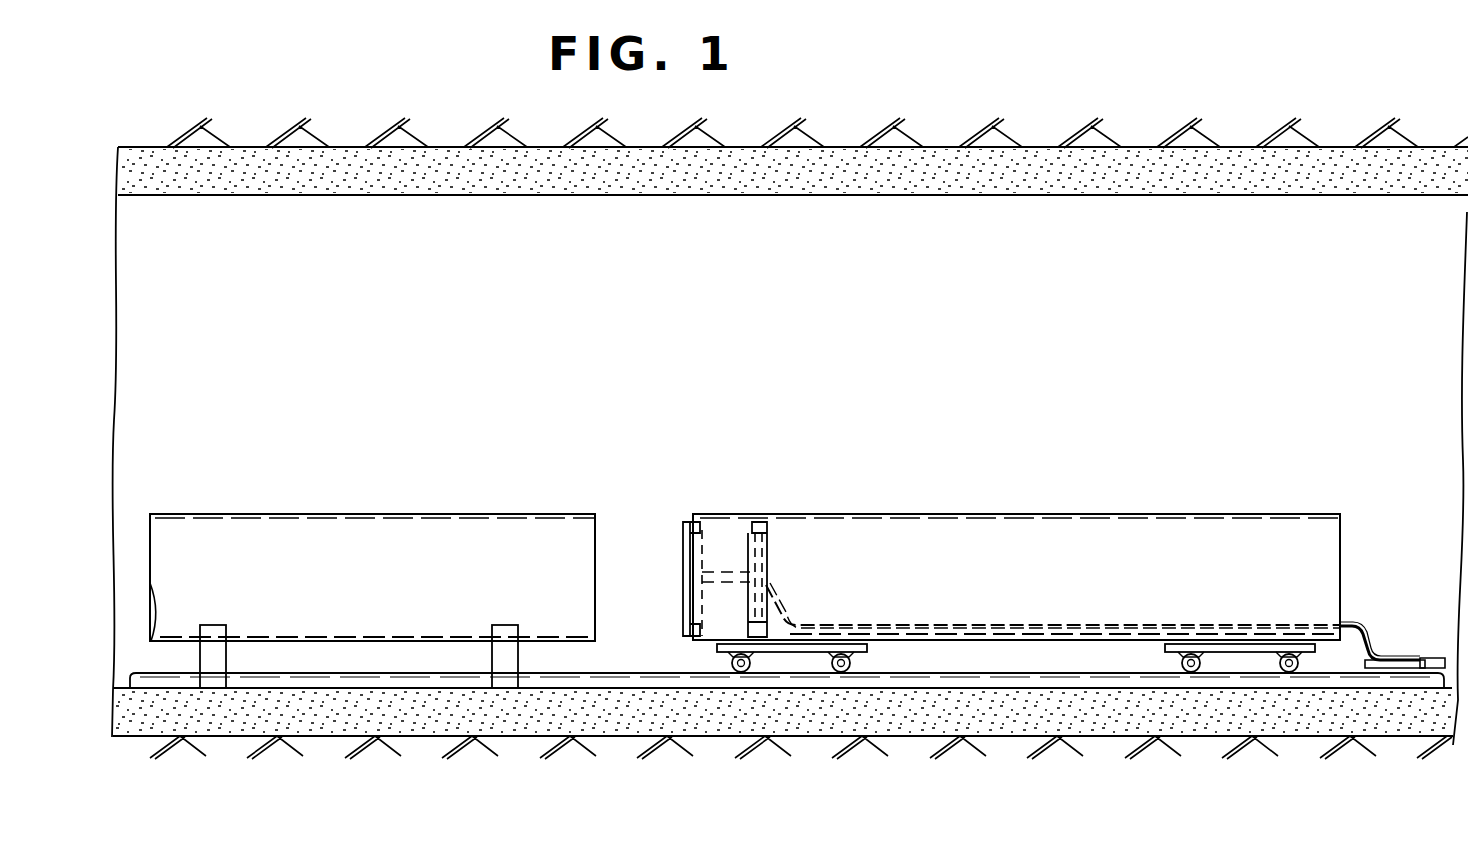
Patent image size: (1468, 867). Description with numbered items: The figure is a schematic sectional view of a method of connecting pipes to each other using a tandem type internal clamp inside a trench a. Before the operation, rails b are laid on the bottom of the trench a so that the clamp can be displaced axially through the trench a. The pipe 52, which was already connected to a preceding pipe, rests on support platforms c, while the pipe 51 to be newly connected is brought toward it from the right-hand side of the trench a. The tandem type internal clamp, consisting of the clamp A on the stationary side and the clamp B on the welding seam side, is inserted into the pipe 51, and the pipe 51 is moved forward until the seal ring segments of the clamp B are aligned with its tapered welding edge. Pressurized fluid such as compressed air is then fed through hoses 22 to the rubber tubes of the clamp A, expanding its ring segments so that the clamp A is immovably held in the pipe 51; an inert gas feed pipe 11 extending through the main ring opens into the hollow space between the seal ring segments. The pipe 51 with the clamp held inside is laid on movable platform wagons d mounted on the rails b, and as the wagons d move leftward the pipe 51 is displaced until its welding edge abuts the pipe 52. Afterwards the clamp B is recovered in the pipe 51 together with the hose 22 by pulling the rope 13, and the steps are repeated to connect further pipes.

The trench a is at (933, 170).
The rails b is at (1030, 680).
The support platforms c is at (226, 662).
The movable platform wagons d is at (780, 652).
The pipe 51 is at (1107, 537).
The pipe 52 is at (380, 540).
The clamp A is at (768, 557).
The clamp B is at (683, 538).
The inert gas feed pipe 11 is at (1357, 625).
The hoses 22 is at (1402, 657).
The rope 13 is at (1432, 658).